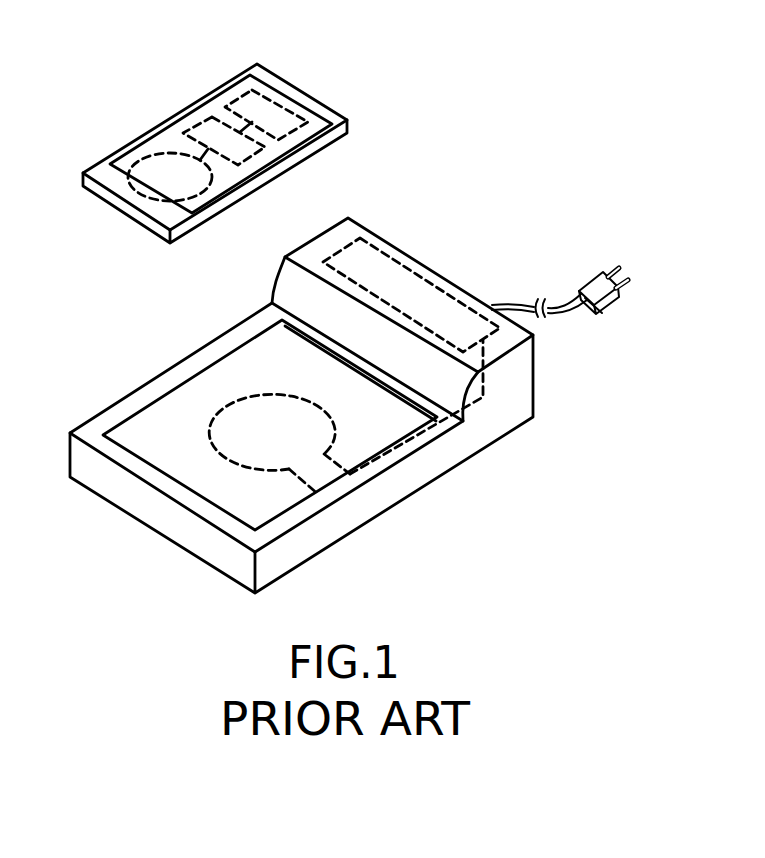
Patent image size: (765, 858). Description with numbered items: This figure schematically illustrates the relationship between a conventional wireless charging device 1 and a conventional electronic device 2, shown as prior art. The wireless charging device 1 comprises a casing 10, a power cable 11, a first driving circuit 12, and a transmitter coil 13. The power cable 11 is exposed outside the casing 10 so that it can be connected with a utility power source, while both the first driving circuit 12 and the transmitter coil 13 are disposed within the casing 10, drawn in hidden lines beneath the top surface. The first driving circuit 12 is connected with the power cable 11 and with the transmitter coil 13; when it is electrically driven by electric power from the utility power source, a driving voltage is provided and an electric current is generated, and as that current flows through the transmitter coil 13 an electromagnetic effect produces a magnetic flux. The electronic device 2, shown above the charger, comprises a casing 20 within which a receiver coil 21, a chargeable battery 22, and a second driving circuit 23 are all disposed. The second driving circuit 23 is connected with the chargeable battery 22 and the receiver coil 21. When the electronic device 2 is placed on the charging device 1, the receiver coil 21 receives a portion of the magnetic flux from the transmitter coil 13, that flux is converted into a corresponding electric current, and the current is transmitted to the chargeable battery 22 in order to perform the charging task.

The wireless charging device 1 is at (207, 335).
The casing 10 is at (160, 383).
The power cable 11 is at (572, 313).
The first driving circuit 12 is at (420, 277).
The transmitter coil 13 is at (217, 455).
The electronic device 2 is at (232, 63).
The casing 20 is at (113, 203).
The receiver coil 21 is at (135, 165).
The chargeable battery 22 is at (277, 105).
The second driving circuit 23 is at (198, 122).